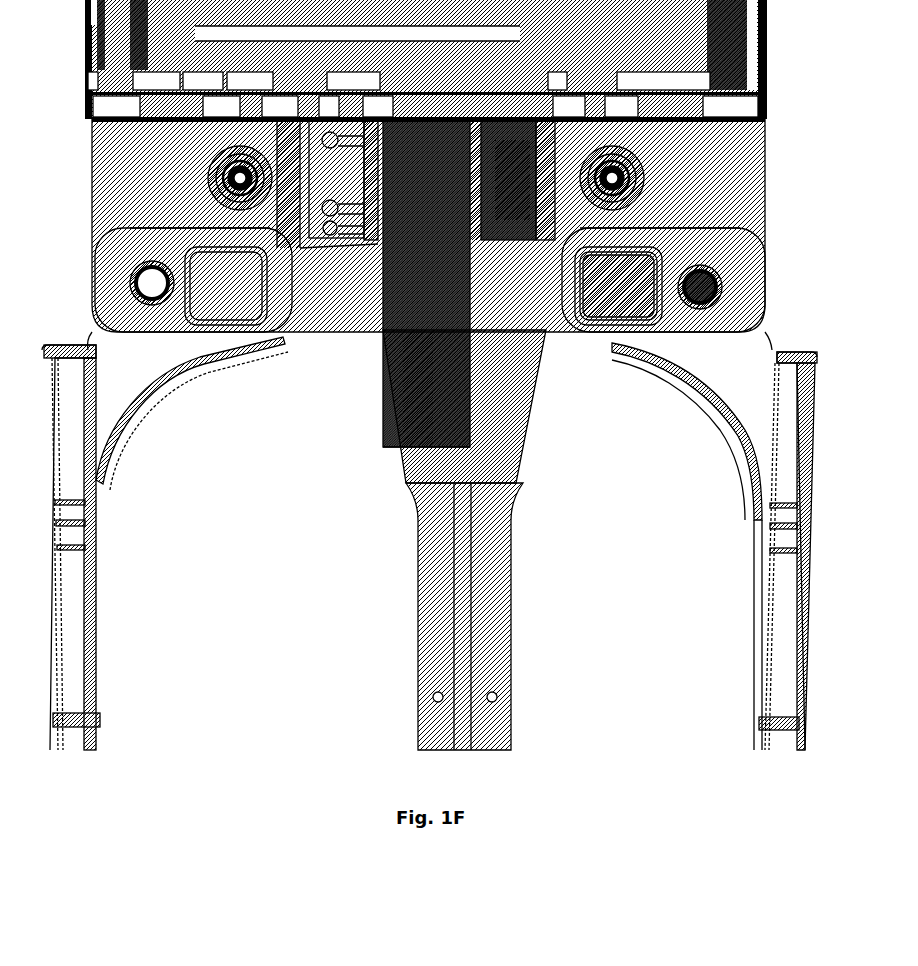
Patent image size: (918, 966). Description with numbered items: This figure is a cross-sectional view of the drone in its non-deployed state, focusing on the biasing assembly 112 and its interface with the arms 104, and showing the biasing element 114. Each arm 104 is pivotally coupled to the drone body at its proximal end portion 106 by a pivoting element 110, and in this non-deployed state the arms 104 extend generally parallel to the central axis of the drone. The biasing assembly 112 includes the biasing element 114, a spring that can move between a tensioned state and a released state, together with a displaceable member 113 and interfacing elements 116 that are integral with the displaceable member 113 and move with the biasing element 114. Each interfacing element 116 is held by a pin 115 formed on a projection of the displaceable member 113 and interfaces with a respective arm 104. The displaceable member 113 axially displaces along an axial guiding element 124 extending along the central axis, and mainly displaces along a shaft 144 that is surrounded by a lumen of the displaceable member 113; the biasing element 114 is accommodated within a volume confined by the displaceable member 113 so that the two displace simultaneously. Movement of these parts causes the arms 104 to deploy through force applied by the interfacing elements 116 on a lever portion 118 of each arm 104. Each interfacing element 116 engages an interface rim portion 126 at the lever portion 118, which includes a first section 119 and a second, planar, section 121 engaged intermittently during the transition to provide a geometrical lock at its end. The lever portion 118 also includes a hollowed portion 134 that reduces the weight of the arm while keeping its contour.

The arm 104 is at (740, 373).
The proximal end portion 106 is at (677, 440).
The pivoting element 110 is at (133, 272).
The biasing assembly 112 is at (338, 265).
The displaceable member 113 is at (705, 110).
The biasing element 114 is at (642, 157).
The pin 115 is at (213, 193).
The interfacing element 116 is at (210, 163).
The lever portion 118 is at (672, 385).
The first section 119 is at (147, 228).
The second, planar, section 121 is at (247, 235).
The axial guiding element 124 is at (389, 330).
The interface rim portion 126 is at (233, 236).
The hollowed portion 134 is at (627, 318).
The shaft 144 is at (378, 240).